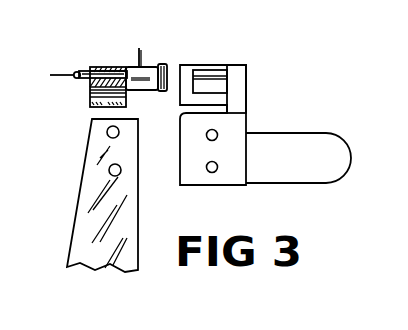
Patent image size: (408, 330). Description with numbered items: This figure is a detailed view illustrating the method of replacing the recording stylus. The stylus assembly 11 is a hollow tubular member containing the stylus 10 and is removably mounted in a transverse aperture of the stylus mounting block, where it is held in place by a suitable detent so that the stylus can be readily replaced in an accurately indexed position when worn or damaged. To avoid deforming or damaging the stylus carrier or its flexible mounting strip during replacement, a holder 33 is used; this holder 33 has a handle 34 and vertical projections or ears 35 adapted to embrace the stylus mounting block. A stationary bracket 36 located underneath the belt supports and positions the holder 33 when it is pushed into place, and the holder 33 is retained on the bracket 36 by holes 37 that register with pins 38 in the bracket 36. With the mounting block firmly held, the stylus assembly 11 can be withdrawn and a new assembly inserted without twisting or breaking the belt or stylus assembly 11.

The stylus 10 is at (69, 72).
The stylus assembly 11 is at (115, 62).
The holder 33 is at (241, 97).
The handle 34 is at (286, 142).
The vertical projections or ears 35 is at (239, 65).
The stationary bracket 36 is at (86, 172).
The holes 37 is at (212, 141).
The pins 38 is at (119, 134).